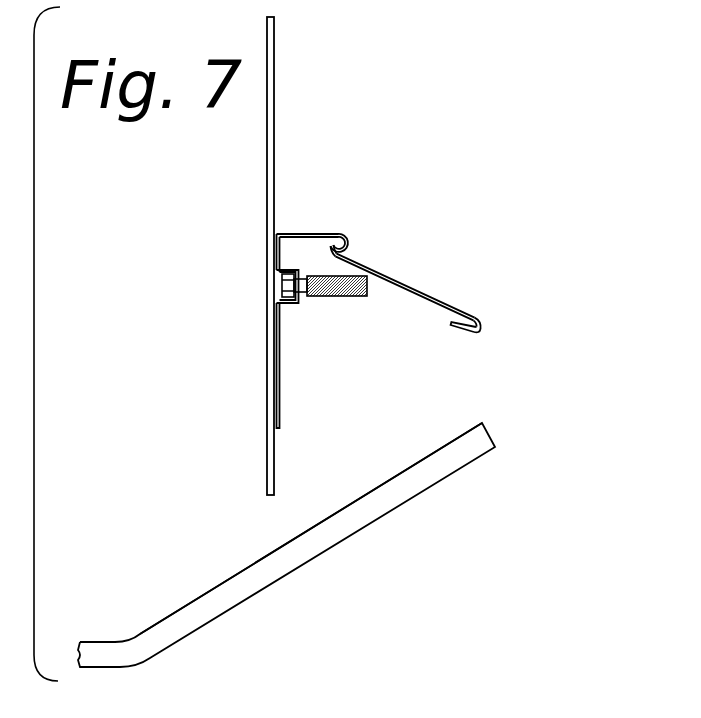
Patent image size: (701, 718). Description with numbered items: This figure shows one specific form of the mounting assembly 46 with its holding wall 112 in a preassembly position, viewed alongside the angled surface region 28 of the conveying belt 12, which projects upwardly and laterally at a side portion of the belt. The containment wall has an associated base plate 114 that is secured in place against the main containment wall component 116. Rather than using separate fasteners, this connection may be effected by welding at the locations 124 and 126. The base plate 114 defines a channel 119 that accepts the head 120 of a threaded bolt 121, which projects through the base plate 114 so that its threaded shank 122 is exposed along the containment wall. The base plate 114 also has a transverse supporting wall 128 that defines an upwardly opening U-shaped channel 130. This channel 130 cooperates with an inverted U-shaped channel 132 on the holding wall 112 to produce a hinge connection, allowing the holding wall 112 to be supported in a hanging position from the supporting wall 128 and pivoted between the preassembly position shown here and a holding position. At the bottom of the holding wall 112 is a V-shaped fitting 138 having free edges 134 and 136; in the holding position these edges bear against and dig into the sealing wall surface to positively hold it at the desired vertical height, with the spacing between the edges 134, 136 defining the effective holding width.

The conveying belt 12 is at (318, 540).
The angled surface region 28 is at (357, 494).
The mounting assembly 46 is at (408, 244).
The holding wall 112 is at (428, 294).
The base plate 114 is at (373, 293).
The main containment wall component 116 is at (275, 52).
The channel 119 is at (289, 292).
The head 120 is at (287, 279).
The threaded bolt 121 is at (359, 297).
The threaded shank 122 is at (333, 297).
The welding location 124 is at (279, 233).
The welding location 126 is at (281, 425).
The transverse supporting wall 128 is at (312, 233).
The U-shaped channel 130 is at (348, 237).
The inverted U-shaped channel 132 is at (346, 250).
The free edge 134 is at (452, 323).
The free edge 136 is at (479, 335).
The V-shaped fitting 138 is at (488, 322).